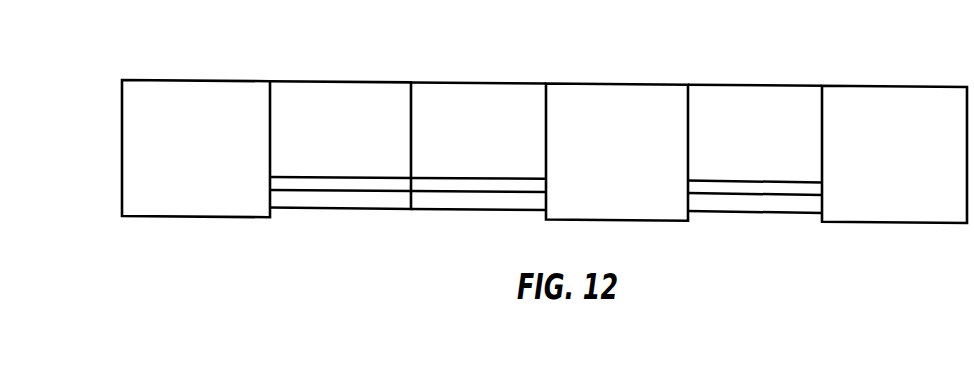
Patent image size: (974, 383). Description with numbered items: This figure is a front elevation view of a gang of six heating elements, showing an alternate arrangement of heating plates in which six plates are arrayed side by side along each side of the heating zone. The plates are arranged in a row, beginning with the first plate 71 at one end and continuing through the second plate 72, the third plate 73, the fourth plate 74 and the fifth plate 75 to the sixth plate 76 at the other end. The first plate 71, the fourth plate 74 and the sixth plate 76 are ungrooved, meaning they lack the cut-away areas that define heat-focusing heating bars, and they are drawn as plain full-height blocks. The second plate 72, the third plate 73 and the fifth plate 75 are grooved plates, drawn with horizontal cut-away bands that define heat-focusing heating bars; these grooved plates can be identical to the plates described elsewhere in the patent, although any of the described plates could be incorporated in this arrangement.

The first heating plate 71 is at (190, 140).
The second heating plate 72 is at (333, 130).
The third heating plate 73 is at (480, 127).
The fourth heating plate 74 is at (605, 147).
The fifth heating plate 75 is at (753, 133).
The sixth heating plate 76 is at (898, 137).